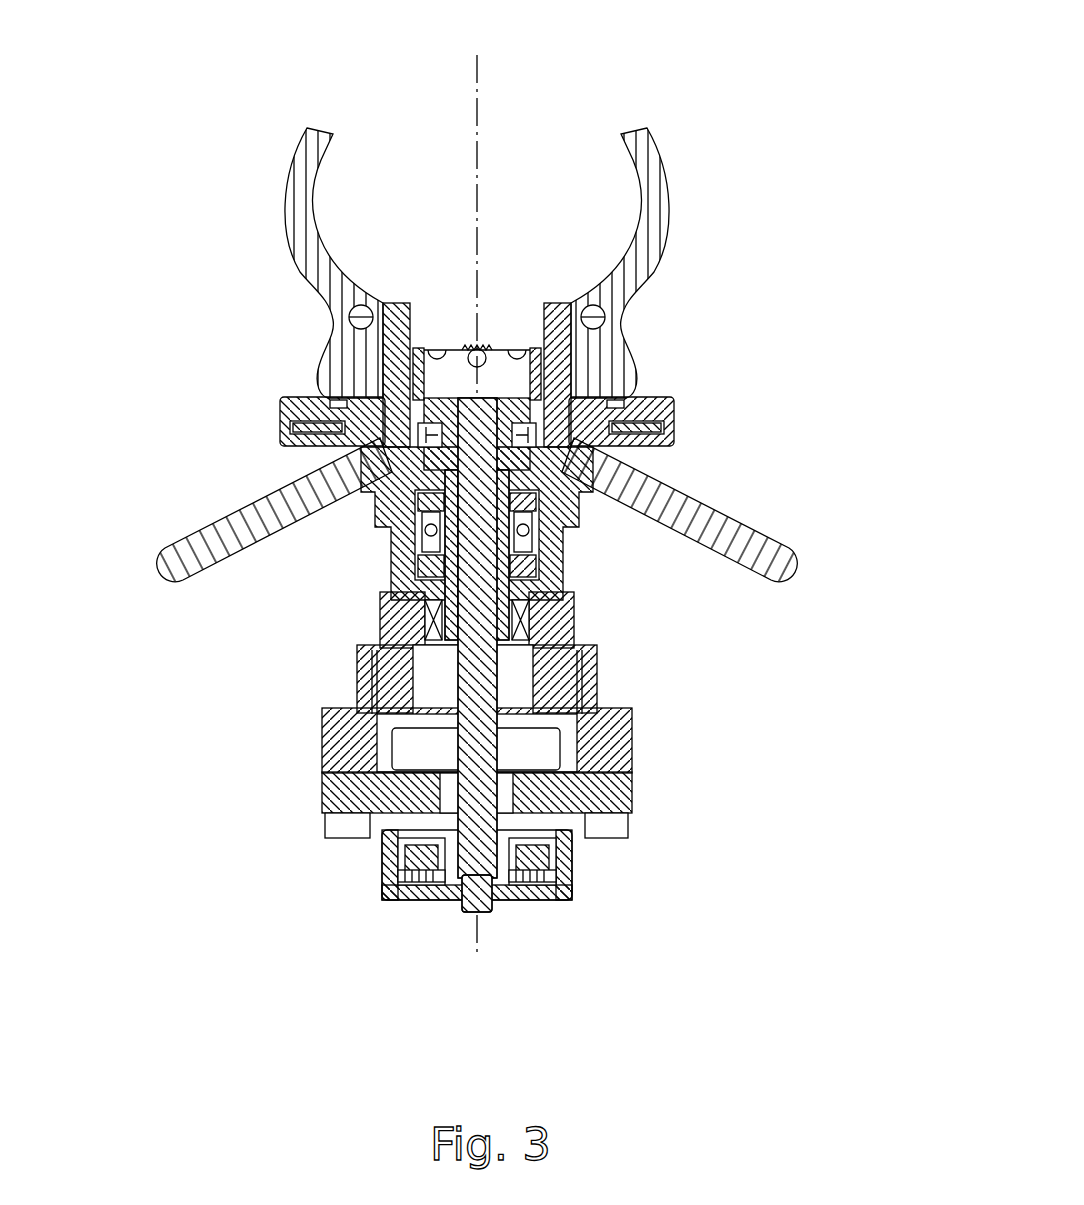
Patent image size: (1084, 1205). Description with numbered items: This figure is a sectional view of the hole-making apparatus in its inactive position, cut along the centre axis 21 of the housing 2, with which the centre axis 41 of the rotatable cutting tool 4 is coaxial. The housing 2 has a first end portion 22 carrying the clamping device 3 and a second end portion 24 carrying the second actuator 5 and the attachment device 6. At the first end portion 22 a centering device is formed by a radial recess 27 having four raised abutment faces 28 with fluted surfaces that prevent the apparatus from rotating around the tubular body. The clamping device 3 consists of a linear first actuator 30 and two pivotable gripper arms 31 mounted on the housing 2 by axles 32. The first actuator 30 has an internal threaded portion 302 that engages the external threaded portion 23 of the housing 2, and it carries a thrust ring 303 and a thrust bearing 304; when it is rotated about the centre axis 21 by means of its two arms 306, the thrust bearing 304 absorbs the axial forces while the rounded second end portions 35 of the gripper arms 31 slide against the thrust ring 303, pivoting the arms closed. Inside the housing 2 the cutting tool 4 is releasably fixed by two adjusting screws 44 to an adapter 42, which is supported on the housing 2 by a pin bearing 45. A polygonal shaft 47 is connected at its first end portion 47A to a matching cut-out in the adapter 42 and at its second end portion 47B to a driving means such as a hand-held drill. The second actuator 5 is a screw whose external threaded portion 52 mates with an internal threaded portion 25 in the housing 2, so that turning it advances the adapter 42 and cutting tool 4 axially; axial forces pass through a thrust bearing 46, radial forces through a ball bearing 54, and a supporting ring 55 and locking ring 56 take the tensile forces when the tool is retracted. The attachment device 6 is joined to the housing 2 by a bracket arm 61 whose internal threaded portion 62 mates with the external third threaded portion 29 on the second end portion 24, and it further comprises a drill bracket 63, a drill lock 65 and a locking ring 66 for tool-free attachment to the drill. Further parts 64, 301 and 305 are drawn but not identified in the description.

The housing 2 is at (390, 553).
The clamping device 3 is at (770, 298).
The cutting tool 4 is at (622, 332).
The second actuator 5 is at (458, 643).
The attachment device 6 is at (623, 929).
The centre axis of the housing 21 is at (580, 477).
The first end portion 22 is at (385, 357).
The external threaded portion 23 is at (212, 549).
The second end portion 24 is at (570, 623).
The internal threaded portion 25 is at (600, 680).
The radial recess 27 is at (422, 348).
The raised abutment faces 28 is at (555, 308).
The external third threaded portion 29 is at (748, 701).
The first actuator 30 is at (792, 448).
The gripper arms 31 is at (282, 203).
The axles 32 is at (326, 312).
The second end portions of the gripper arms 35 is at (512, 383).
The centre axis of the cutting tool 41 is at (477, 100).
The adapter 42 is at (560, 527).
The adjusting screws 44 is at (372, 465).
The pin bearing 45 is at (560, 547).
The thrust bearing 46 is at (568, 570).
The polygonal shaft 47 is at (430, 726).
The first end portion of the shaft 47A is at (395, 612).
The second end portion of the shaft 47B is at (488, 912).
The external threaded portion 52 is at (767, 746).
The ball bearing 54 is at (395, 655).
The supporting ring 55 is at (400, 690).
The locking ring 56 is at (395, 740).
The bracket arm 61 is at (632, 783).
The internal threaded portion 62 is at (560, 632).
The drill bracket 63 is at (628, 815).
The nut 64 is at (628, 837).
The drill lock 65 is at (570, 853).
The locking ring 66 is at (560, 907).
The left lever 301 is at (720, 498).
The internal threaded portion 302 is at (383, 465).
The thrust ring 303 is at (287, 397).
The thrust bearing 304 is at (320, 433).
The slot 305 is at (340, 406).
The arms 306 is at (782, 540).